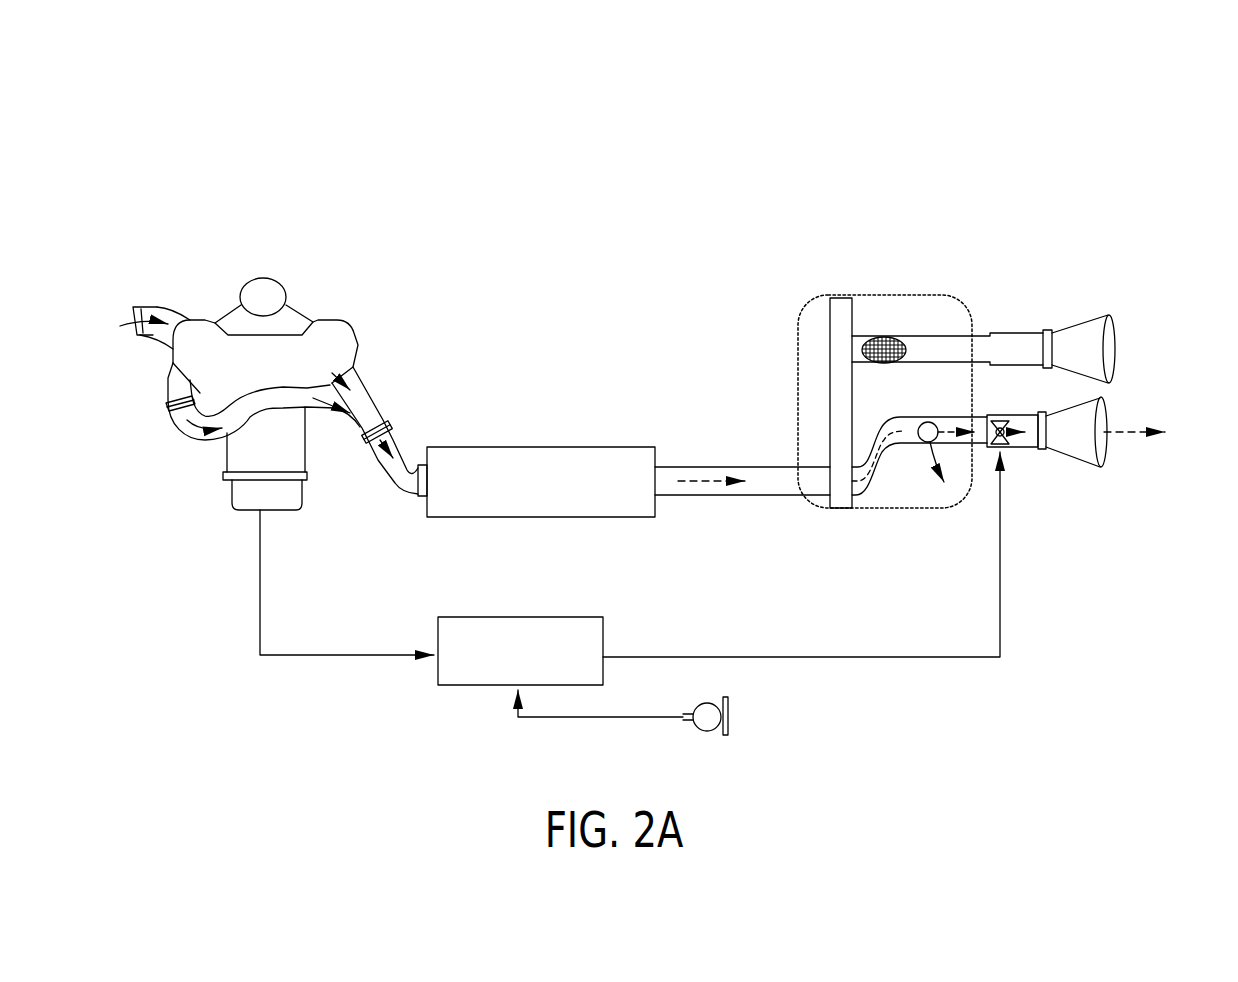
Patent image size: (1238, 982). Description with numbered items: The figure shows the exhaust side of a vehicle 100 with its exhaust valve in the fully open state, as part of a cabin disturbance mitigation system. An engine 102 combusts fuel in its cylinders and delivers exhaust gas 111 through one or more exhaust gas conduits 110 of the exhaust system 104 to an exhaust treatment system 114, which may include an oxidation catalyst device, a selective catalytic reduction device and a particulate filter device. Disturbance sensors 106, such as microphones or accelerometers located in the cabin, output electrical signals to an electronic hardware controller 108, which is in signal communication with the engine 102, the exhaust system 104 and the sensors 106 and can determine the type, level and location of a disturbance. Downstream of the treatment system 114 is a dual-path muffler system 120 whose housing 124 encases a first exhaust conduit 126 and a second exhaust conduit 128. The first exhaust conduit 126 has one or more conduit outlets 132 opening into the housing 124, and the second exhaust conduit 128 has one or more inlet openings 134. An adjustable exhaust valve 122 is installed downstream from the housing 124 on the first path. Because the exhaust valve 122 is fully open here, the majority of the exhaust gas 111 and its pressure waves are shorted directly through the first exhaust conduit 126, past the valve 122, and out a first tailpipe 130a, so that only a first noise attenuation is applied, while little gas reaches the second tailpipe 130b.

The vehicle 100 is at (329, 152).
The engine 102 is at (222, 453).
The exhaust system 104 is at (579, 257).
The disturbance sensors 106 is at (708, 713).
The electronic hardware controller 108 is at (512, 617).
The exhaust gas conduits 110 is at (372, 412).
The exhaust gas 111 is at (385, 458).
The exhaust treatment system 114 is at (540, 440).
The dual-path muffler system 120 is at (889, 207).
The exhaust valve 122 is at (999, 405).
The housing 124 is at (892, 525).
The first exhaust conduit 126 is at (957, 422).
The second exhaust conduit 128 is at (940, 343).
The first tailpipe 130a is at (1087, 473).
The second tailpipe 130b is at (1080, 321).
The conduit outlets 132 is at (893, 427).
The inlet openings 134 is at (890, 337).